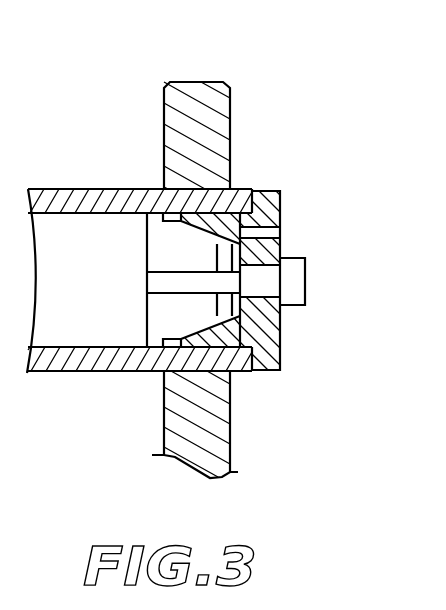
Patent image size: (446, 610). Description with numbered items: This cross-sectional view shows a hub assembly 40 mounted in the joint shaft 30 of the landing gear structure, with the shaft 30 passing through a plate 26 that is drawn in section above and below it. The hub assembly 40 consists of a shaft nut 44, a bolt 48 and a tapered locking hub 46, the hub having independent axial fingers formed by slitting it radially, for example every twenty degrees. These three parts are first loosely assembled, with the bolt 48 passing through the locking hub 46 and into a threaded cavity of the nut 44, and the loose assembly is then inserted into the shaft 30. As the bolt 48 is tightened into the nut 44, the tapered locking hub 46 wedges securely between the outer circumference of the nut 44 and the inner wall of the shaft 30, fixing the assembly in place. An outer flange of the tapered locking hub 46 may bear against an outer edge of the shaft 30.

The mounting plate 26 is at (199, 90).
The joint shaft 30 is at (128, 360).
The hub assembly 40 is at (323, 207).
The shaft nut 44 is at (165, 247).
The tapered locking hub 46 is at (267, 330).
The bolt 48 is at (305, 281).